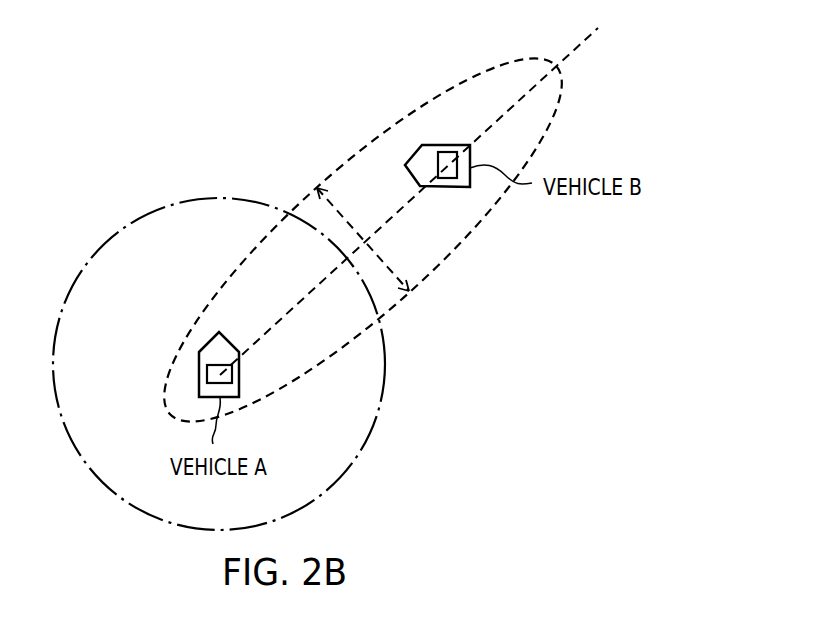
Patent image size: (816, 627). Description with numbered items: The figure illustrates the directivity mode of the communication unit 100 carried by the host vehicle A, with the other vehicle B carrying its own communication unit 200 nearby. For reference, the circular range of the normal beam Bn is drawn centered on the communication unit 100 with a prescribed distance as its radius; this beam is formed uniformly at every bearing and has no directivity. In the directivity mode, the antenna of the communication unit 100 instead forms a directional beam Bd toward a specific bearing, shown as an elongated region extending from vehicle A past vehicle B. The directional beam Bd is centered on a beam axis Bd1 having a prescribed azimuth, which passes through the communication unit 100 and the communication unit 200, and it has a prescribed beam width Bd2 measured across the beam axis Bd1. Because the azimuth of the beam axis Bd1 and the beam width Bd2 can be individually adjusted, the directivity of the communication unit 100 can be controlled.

The communication unit 100 is at (232, 377).
The communication unit 200 is at (452, 152).
The directional beam Bd is at (465, 240).
The beam axis Bd1 is at (409, 195).
The beam width Bd2 is at (371, 239).
The normal beam Bn is at (385, 383).